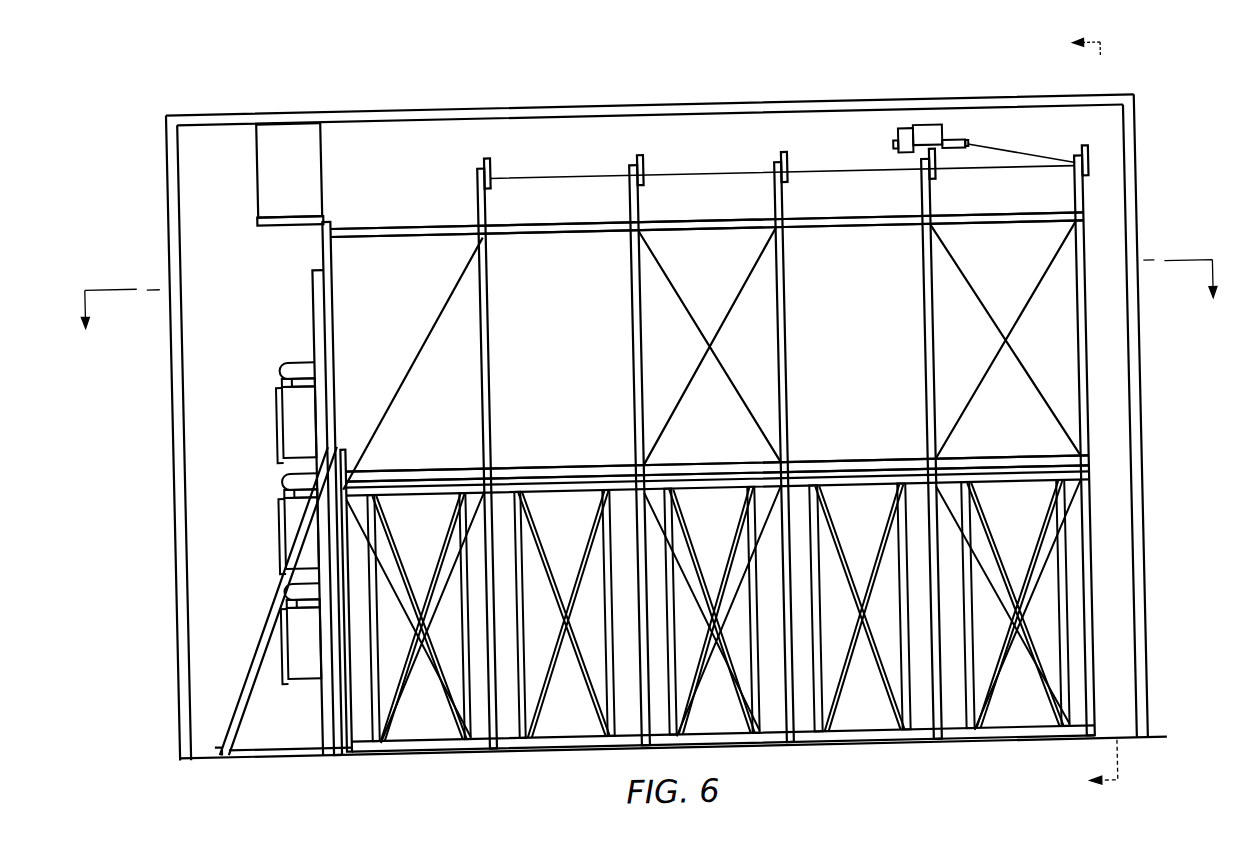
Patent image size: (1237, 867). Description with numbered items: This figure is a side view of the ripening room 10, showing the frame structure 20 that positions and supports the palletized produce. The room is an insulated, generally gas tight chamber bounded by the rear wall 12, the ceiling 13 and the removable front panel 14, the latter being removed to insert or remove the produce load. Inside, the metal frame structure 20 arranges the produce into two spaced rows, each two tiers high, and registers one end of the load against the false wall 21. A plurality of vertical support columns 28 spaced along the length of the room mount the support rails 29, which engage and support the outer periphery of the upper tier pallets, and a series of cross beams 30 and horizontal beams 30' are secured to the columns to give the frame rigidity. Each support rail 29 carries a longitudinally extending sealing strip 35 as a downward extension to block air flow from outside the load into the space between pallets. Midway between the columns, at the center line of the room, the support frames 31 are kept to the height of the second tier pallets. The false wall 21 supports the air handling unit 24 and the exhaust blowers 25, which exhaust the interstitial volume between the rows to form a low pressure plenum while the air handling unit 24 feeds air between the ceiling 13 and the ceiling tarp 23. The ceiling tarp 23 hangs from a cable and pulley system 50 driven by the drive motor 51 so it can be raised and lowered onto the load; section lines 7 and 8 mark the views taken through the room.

The ripening room 10 is at (800, 100).
The rear wall 12 is at (172, 705).
The ceiling 13 is at (1085, 105).
The removable front panel 14 is at (1142, 574).
The frame structure 20 is at (1090, 414).
The false wall 21 is at (325, 256).
The ceiling tarp 23 is at (548, 222).
The air handling unit 24 is at (293, 116).
The exhaust blowers 25 is at (276, 410).
The vertical support columns 28 is at (490, 358).
The support rails 29 is at (1036, 465).
The cross beams 30 is at (709, 356).
The horizontal beams 30' is at (707, 205).
The support frames 31 is at (514, 700).
The sealing strip 35 is at (717, 468).
The cable and pulley system 50 is at (676, 175).
The drive motor 51 is at (935, 131).
The section line 7- 7 is at (650, 309).
The section line 8- 8 is at (1084, 414).